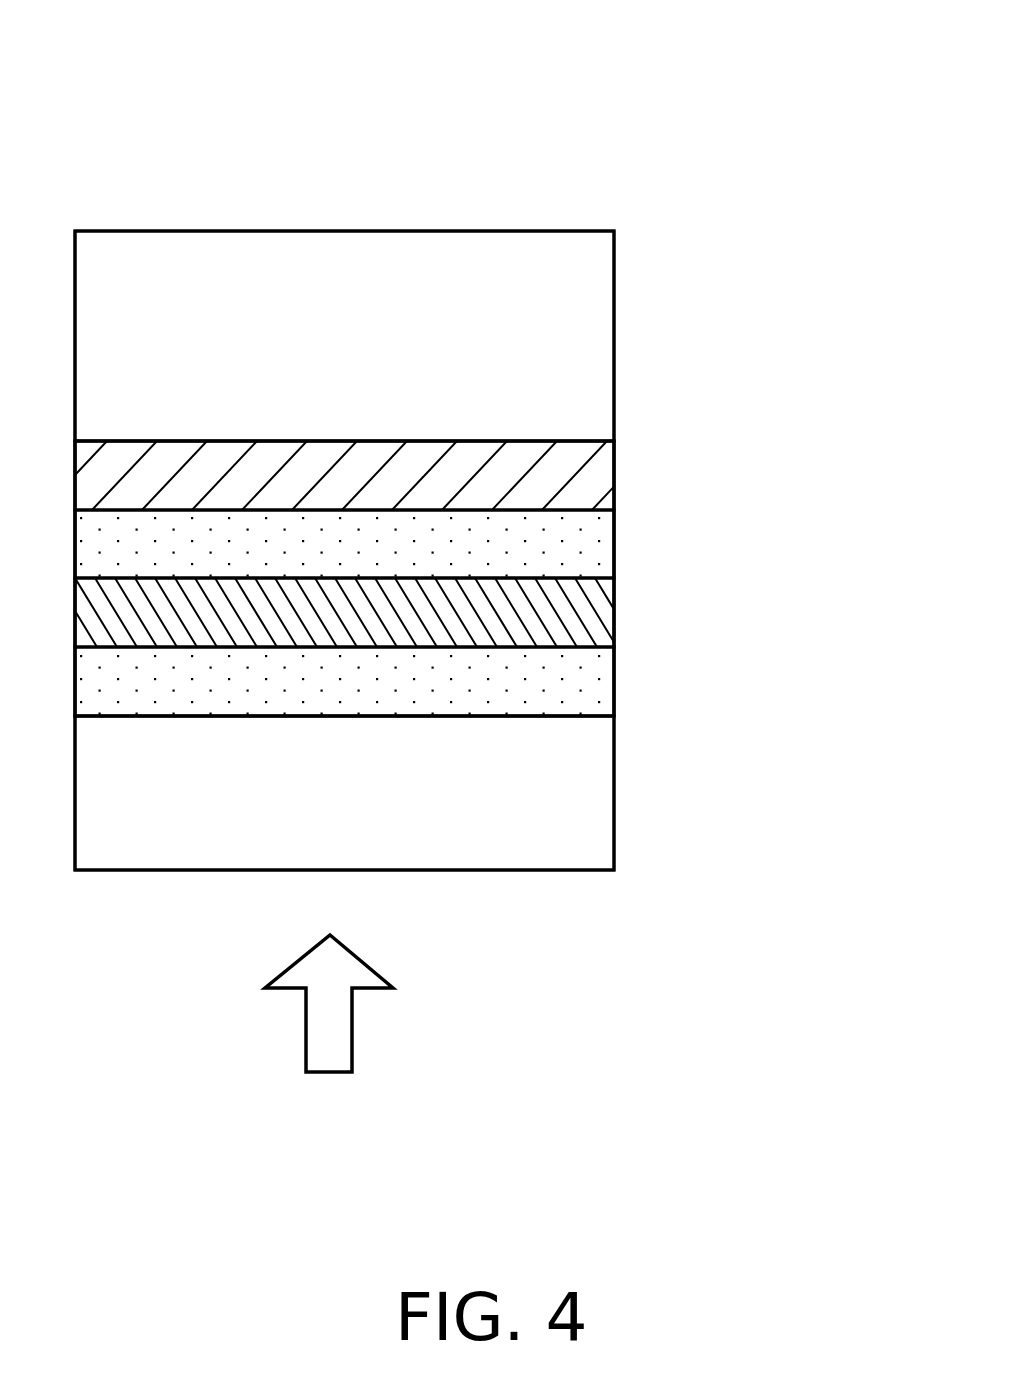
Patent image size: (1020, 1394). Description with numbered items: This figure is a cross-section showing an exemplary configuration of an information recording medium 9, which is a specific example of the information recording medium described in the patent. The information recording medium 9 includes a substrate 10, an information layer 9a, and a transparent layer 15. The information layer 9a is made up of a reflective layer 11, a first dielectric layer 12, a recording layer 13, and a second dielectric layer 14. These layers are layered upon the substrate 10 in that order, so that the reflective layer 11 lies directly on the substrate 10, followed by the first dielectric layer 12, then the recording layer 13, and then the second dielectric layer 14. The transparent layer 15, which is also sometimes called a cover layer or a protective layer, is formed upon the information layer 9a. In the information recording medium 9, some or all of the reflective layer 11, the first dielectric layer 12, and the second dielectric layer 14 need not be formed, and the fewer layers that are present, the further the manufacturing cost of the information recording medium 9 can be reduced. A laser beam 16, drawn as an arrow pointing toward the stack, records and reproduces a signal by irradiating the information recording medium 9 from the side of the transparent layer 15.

The information recording medium 9 is at (358, 132).
The information layer 9a is at (785, 425).
The substrate 10 is at (553, 351).
The reflective layer 11 is at (580, 479).
The first dielectric layer 12 is at (587, 545).
The recording layer 13 is at (587, 617).
The second dielectric layer 14 is at (580, 684).
The transparent layer 15 is at (578, 782).
The laser beam 16 is at (355, 1028).